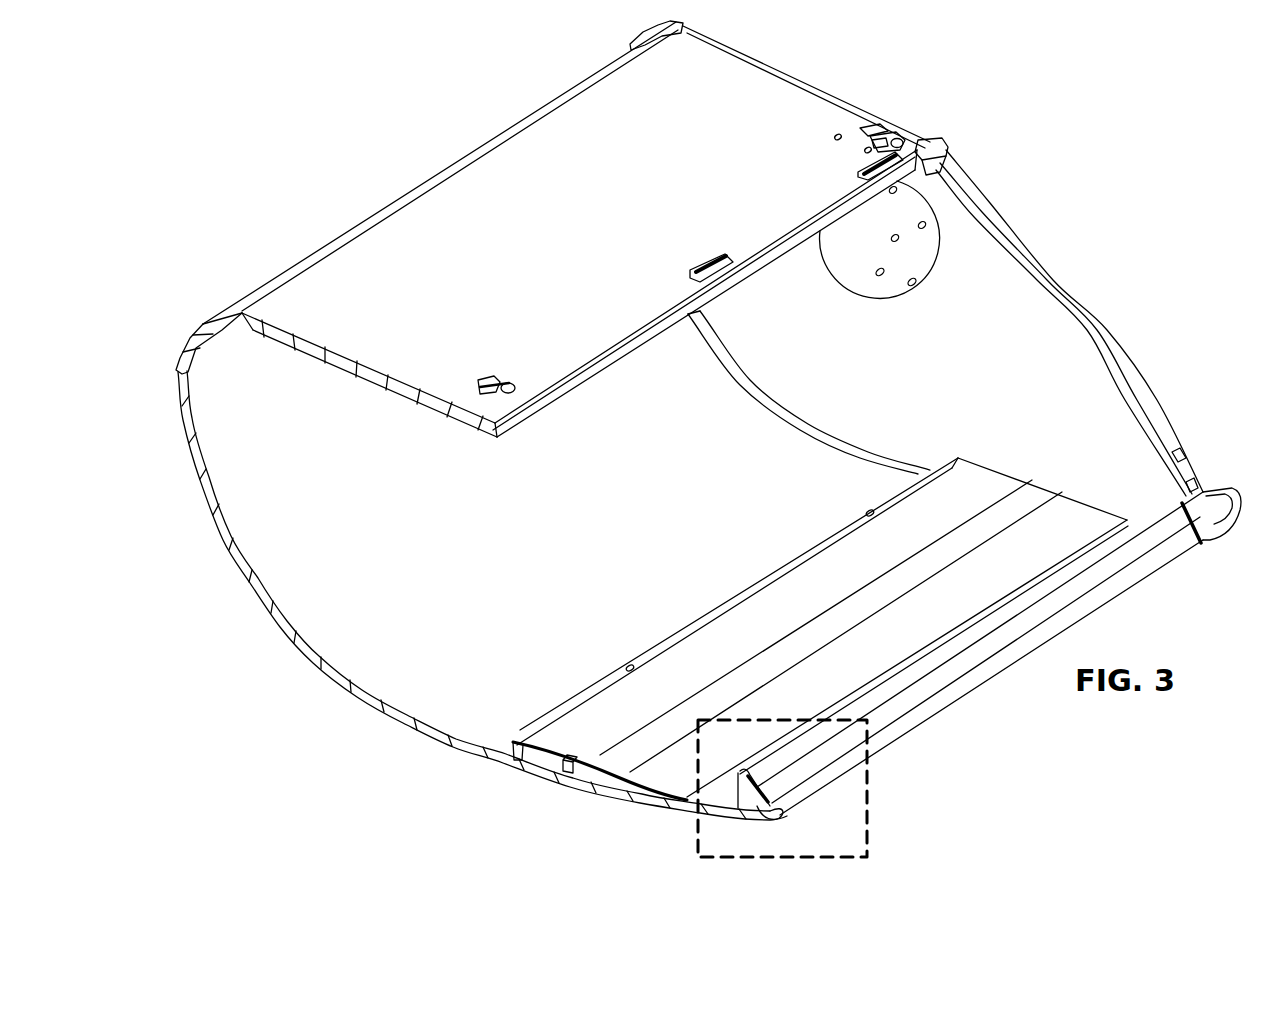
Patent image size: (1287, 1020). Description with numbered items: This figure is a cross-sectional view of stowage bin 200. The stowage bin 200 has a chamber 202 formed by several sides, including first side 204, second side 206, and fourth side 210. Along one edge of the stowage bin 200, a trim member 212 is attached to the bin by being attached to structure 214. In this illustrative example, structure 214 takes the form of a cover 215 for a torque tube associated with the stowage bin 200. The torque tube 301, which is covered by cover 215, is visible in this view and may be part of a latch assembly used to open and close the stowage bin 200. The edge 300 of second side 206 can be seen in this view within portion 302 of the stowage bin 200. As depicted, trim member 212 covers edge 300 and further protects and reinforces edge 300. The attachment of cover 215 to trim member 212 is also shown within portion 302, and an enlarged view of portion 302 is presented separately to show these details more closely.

The stowage bin 200 is at (708, 439).
The chamber 202 is at (340, 630).
The first side 204 is at (480, 181).
The second side 206 is at (464, 755).
The fourth side 210 is at (830, 396).
The trim member 212 is at (942, 721).
The structure 214 is at (992, 478).
The cover 215 is at (1082, 512).
The edge 300 is at (782, 808).
The torque tube 301 is at (557, 767).
The portion 302 is at (872, 805).